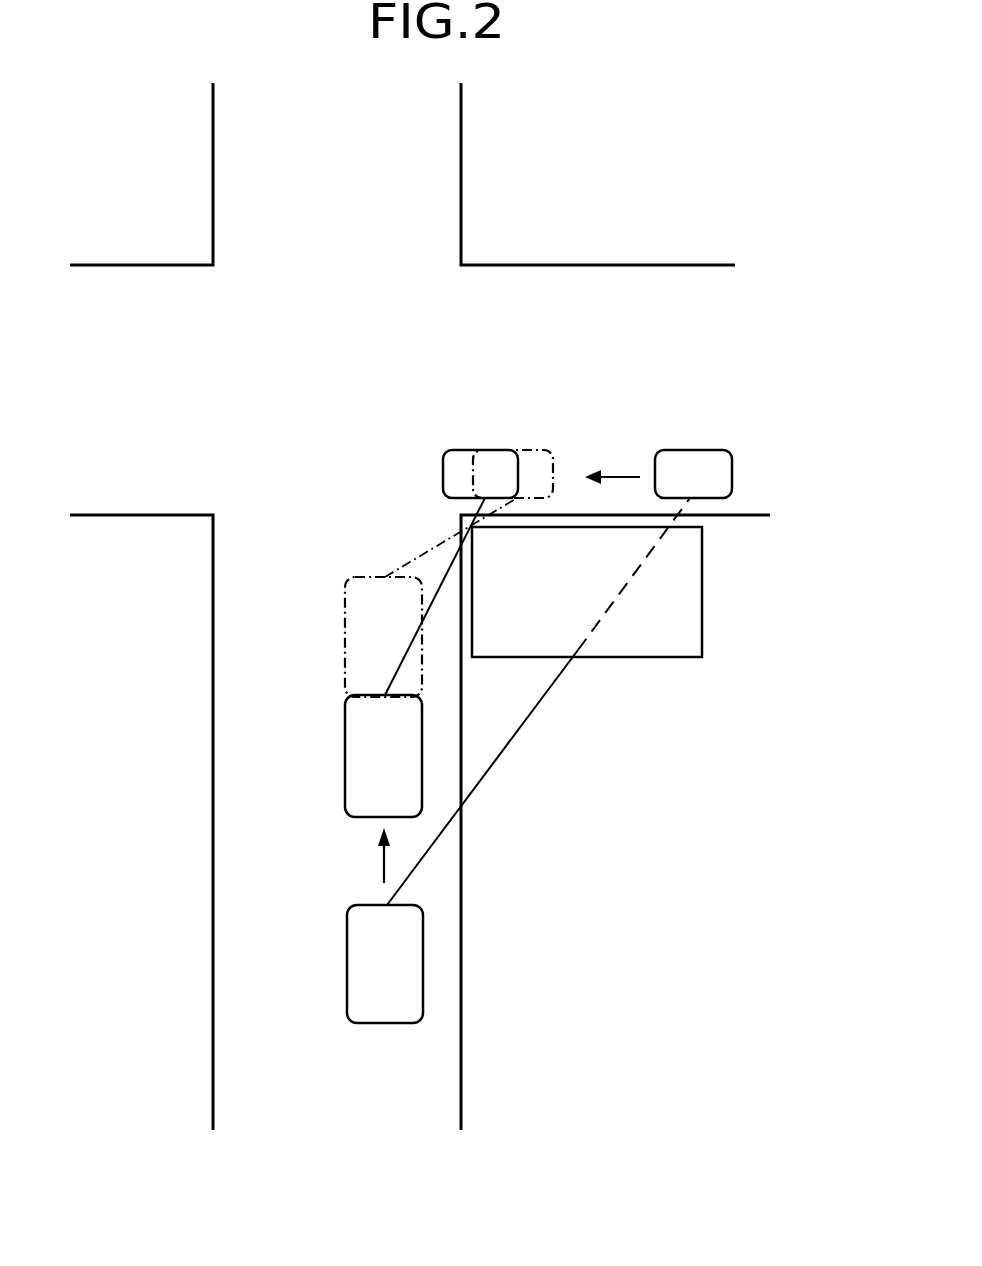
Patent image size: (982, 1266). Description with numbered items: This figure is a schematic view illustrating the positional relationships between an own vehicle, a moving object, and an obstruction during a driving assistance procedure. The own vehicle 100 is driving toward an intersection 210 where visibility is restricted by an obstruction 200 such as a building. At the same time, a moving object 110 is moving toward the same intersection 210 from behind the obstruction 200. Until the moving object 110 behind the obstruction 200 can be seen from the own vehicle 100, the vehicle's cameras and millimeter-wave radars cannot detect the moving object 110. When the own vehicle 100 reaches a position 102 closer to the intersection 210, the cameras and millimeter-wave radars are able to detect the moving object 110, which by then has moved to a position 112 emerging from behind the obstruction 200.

The own vehicle 100 is at (345, 748).
The position 102 is at (345, 618).
The moving object 110 is at (443, 480).
The position 112 is at (520, 450).
The obstruction 200 is at (702, 600).
The intersection 210 is at (341, 380).